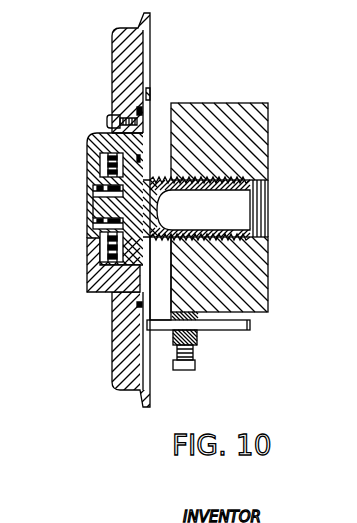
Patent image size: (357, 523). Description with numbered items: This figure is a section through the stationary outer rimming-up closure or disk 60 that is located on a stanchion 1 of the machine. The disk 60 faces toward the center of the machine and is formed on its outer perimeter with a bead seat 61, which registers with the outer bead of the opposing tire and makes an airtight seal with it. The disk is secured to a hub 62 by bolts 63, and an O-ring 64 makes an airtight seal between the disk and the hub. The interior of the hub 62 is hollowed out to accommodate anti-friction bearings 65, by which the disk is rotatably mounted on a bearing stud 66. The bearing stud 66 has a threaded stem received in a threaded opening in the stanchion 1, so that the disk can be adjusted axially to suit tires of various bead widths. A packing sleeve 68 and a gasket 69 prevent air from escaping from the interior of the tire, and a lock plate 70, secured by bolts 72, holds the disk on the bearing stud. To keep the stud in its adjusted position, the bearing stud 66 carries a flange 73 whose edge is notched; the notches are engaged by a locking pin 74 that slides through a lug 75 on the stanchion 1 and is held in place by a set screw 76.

The stanchion 1 is at (258, 285).
The outer rimming-up closure or disk 60 is at (138, 58).
The bead seat 61 is at (130, 390).
The hub 62 is at (90, 142).
The bolts 63 is at (107, 120).
The O-ring 64 is at (141, 102).
The anti-friction bearings 65 is at (103, 165).
The bearing stud 66 is at (147, 173).
The packing sleeve 68 is at (117, 242).
The gasket 69 is at (107, 285).
The lock plate 70 is at (87, 210).
The bolts 72 is at (93, 228).
The flange 73 is at (147, 287).
The locking pin 74 is at (243, 328).
The lug 75 is at (195, 345).
The set screw 76 is at (186, 372).